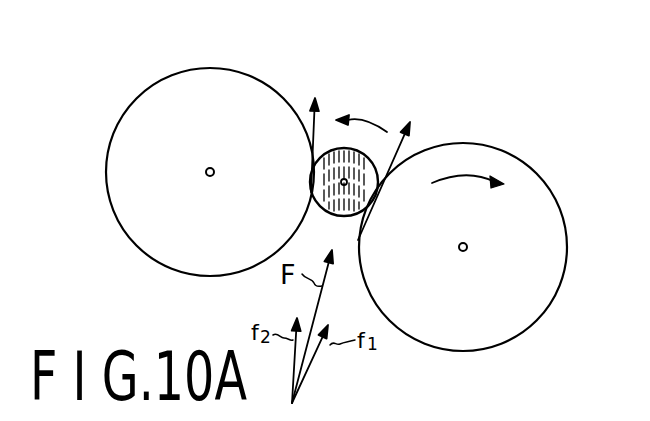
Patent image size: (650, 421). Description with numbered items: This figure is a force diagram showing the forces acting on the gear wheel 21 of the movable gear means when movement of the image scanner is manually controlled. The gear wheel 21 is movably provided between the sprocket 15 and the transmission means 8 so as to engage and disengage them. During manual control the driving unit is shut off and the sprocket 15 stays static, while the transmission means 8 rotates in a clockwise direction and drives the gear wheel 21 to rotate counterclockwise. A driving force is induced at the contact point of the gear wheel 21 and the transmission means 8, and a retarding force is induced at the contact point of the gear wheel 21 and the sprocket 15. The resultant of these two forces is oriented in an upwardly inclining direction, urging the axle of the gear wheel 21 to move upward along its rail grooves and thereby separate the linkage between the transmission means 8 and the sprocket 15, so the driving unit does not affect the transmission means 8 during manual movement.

The sprocket 15 is at (262, 90).
The gear wheel 21 is at (362, 168).
The transmission means 8 is at (558, 214).